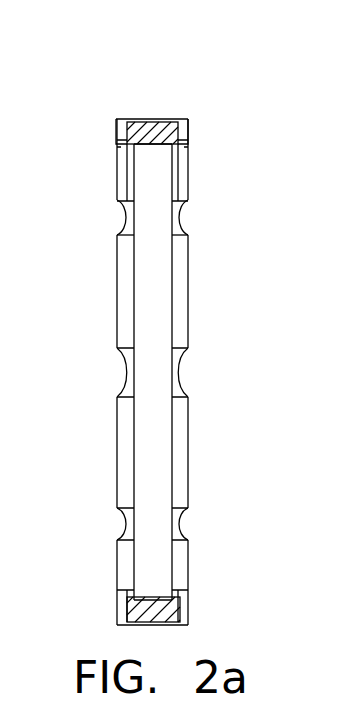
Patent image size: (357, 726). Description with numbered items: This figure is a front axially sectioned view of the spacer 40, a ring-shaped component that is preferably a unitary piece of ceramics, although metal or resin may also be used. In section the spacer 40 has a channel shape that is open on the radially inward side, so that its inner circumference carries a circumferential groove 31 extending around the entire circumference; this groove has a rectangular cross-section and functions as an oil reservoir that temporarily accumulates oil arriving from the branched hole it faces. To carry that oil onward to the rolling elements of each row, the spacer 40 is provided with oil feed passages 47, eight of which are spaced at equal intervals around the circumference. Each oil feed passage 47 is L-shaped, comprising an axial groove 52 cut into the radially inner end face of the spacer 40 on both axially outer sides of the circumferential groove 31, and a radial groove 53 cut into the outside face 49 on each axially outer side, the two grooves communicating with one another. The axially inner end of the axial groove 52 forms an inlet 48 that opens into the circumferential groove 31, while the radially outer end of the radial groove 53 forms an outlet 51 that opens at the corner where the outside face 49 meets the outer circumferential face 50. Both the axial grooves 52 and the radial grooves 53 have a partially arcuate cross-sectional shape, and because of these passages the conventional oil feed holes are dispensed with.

The spacer 40 is at (126, 93).
The circumferential groove 31 is at (160, 145).
The oil feed passage 47 is at (108, 151).
The inlet 48 is at (128, 152).
The outside face 49 is at (117, 336).
The outer circumferential face 50 is at (157, 121).
The outlet 51 is at (118, 120).
The axial groove 52 is at (124, 160).
The radial groove 53 is at (115, 127).